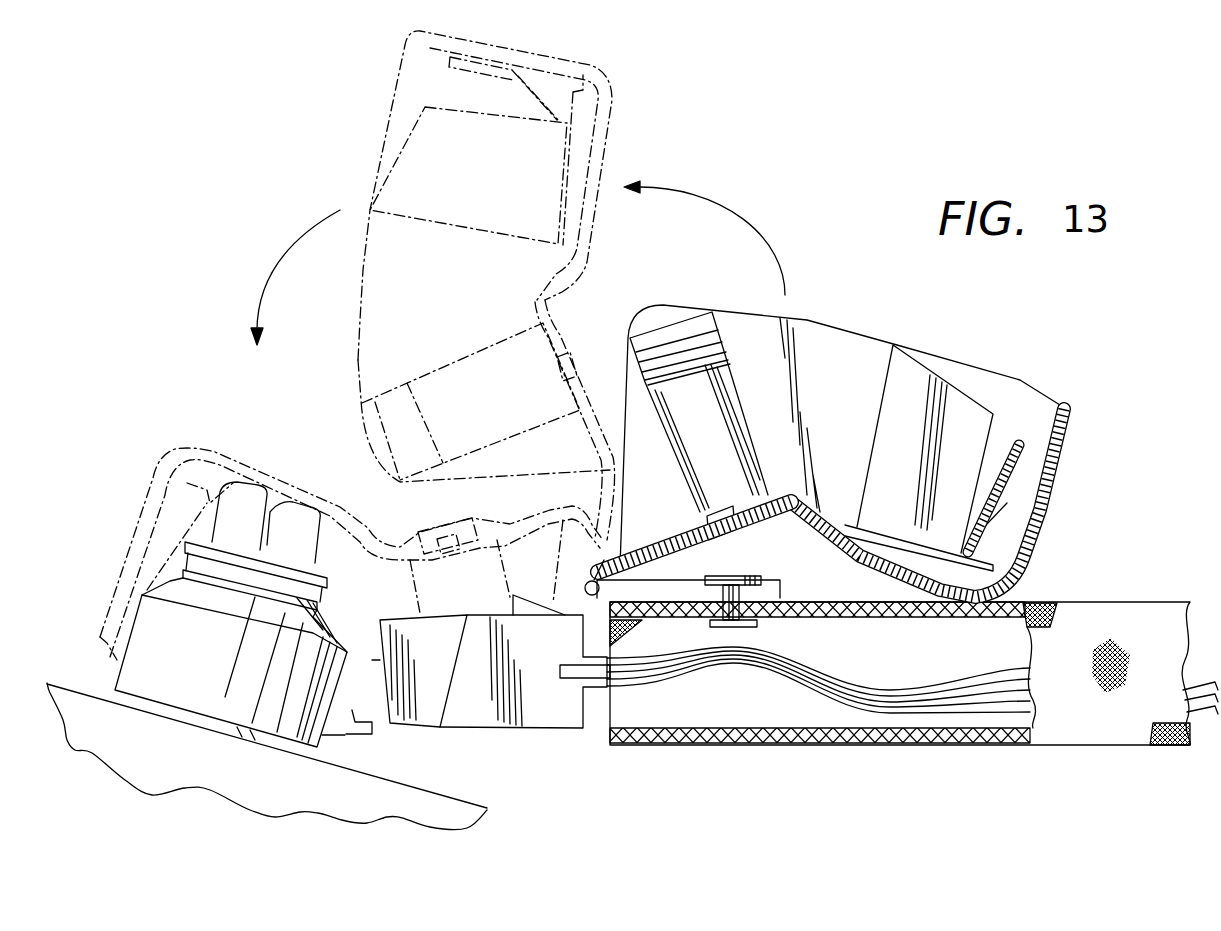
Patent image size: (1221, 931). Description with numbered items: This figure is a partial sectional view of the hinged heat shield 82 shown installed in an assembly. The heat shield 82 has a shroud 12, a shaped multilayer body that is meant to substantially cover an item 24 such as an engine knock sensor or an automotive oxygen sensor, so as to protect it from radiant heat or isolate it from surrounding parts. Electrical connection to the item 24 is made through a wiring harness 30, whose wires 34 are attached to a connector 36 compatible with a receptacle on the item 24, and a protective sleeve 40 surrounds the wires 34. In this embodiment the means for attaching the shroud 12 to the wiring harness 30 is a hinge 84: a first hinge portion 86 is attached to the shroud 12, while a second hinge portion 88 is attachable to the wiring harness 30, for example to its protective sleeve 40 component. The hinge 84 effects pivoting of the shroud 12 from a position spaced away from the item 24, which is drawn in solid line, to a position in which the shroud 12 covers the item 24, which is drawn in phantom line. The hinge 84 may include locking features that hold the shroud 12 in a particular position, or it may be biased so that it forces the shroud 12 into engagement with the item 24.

The shroud 12 is at (1030, 517).
The item 24 is at (213, 672).
The wiring harness 30 is at (907, 729).
The wires 34 is at (907, 713).
The connector 36 is at (533, 697).
The protective sleeve 40 is at (793, 745).
The heat shield 82 is at (872, 451).
The hinge 84 is at (630, 575).
The first hinge portion 86 is at (660, 547).
The second hinge portion 88 is at (680, 593).